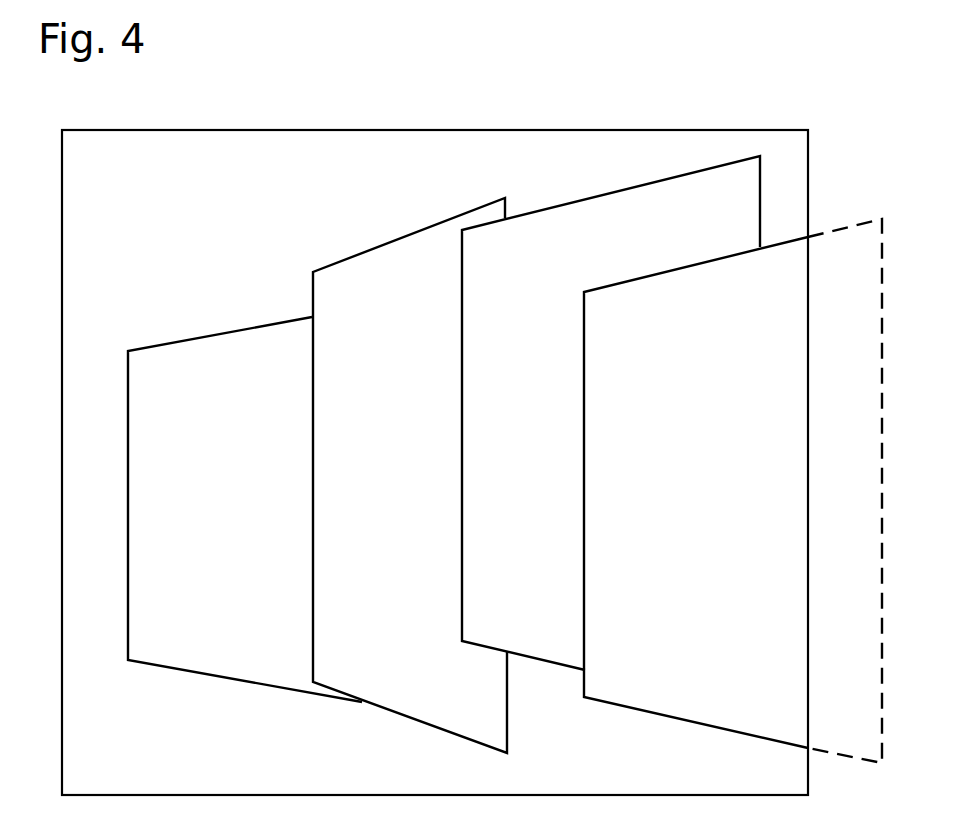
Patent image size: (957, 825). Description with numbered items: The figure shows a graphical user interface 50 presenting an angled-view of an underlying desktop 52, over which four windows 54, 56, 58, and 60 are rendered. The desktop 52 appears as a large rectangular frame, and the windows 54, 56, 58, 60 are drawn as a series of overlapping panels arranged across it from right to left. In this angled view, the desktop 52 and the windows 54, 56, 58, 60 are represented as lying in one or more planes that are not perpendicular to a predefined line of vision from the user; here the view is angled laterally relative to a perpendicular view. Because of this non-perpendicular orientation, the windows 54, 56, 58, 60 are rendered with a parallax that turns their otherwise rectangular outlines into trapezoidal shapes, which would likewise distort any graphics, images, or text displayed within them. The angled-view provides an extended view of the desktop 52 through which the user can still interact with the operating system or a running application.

The graphical user interface 50 is at (756, 100).
The desktop 52 is at (463, 143).
The window 54 is at (688, 379).
The window 56 is at (531, 375).
The window 58 is at (407, 393).
The window 60 is at (249, 488).